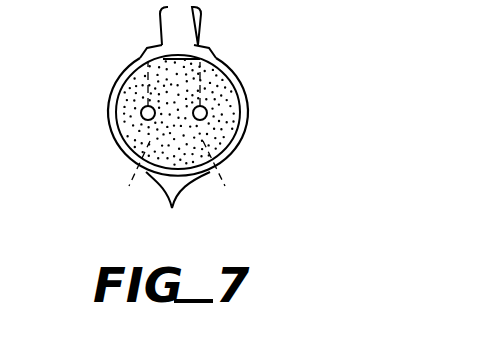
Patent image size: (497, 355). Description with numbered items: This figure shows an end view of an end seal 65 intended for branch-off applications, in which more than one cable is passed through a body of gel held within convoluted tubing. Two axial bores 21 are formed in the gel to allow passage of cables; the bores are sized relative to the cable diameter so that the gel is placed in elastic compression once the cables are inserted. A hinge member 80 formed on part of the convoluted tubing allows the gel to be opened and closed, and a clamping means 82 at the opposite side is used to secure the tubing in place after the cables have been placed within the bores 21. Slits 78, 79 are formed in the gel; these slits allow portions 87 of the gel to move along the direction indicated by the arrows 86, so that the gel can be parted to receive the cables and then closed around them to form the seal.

The end seal 65 is at (91, 171).
The clamping means 82 is at (180, 22).
The arrows 86 is at (101, 79).
The portions of the gel 87 is at (133, 89).
The axial bores 21 is at (143, 118).
The slit 78 is at (124, 174).
The slit 79 is at (229, 174).
The hinge member 80 is at (178, 203).